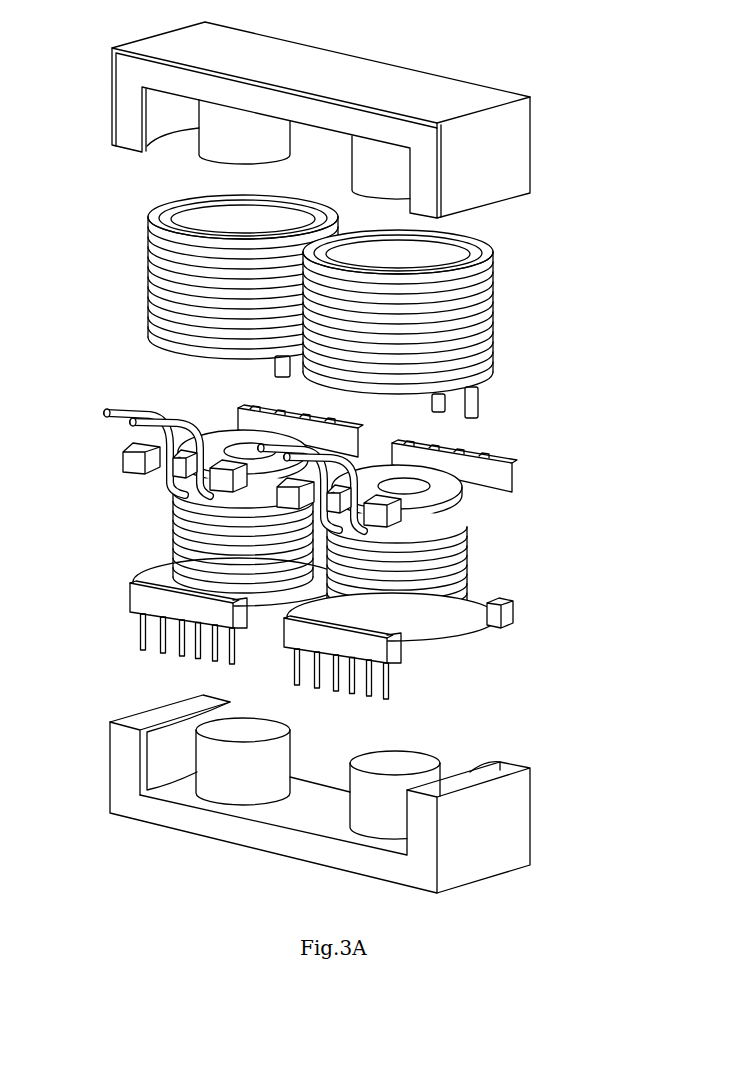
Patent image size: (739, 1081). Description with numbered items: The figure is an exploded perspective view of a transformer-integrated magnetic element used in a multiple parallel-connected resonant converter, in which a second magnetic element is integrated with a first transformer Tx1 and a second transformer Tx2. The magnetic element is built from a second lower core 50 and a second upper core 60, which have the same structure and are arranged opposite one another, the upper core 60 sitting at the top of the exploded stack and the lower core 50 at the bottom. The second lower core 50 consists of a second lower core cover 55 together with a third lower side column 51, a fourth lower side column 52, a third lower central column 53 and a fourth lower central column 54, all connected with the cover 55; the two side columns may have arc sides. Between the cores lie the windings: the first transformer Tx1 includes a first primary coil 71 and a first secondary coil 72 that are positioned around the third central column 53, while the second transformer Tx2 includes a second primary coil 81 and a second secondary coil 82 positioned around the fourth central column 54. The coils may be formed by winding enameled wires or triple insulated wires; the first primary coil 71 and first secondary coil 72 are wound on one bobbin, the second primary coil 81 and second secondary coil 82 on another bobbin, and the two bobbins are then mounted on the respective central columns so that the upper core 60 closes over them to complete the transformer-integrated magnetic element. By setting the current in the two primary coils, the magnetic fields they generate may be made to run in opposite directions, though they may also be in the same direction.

The second lower core 50 is at (328, 799).
The third lower side column 51 is at (513, 817).
The fourth lower side column 52 is at (122, 765).
The third lower central column 53 is at (248, 732).
The fourth lower central column 54 is at (410, 762).
The second lower core cover 55 is at (188, 822).
The second upper core 60 is at (356, 32).
The first primary coil 71 is at (173, 523).
The first secondary coil 72 is at (148, 270).
The second primary coil 81 is at (467, 553).
The second secondary coil 82 is at (495, 312).
The first transformer Tx1 is at (82, 282).
The second transformer Tx2 is at (565, 315).